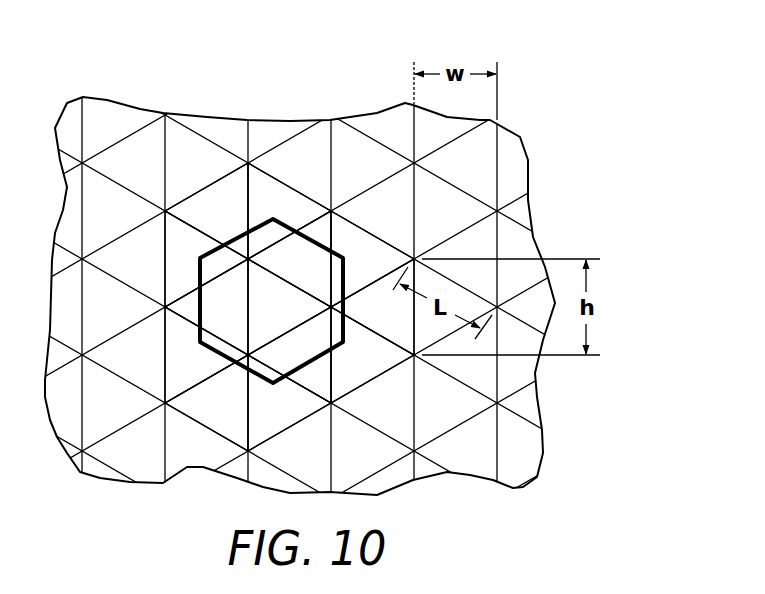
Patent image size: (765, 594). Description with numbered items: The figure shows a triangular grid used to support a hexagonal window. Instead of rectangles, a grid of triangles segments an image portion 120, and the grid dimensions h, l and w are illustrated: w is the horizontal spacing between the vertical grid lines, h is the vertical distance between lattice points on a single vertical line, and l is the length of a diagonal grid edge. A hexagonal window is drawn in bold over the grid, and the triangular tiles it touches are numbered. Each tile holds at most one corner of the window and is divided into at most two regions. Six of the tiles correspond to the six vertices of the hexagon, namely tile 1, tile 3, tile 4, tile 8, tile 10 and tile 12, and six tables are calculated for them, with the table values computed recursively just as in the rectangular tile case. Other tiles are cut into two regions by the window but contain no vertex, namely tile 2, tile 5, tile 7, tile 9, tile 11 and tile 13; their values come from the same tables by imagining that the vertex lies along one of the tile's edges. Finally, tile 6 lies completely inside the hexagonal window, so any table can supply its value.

The image portion 120 is at (377, 113).
The tile 1 is at (206, 259).
The tile 2 is at (206, 211).
The tile 3 is at (289, 211).
The tile 4 is at (206, 355).
The tile 5 is at (206, 307).
The tile 6 is at (289, 307).
The tile 7 is at (289, 259).
The tile 8 is at (372, 259).
The tile 9 is at (206, 403).
The tile 10 is at (289, 403).
The tile 11 is at (289, 355).
The tile 12 is at (372, 355).
The tile 13 is at (372, 307).